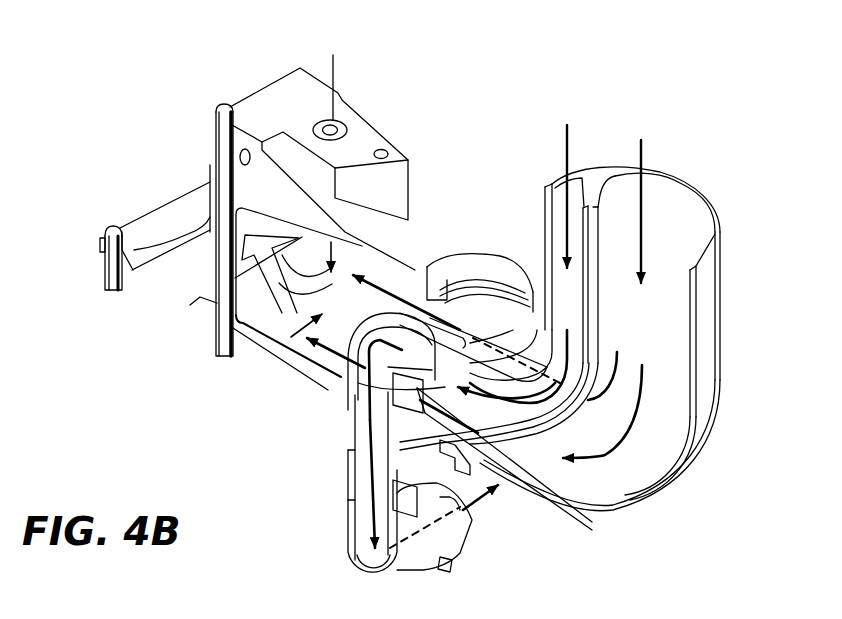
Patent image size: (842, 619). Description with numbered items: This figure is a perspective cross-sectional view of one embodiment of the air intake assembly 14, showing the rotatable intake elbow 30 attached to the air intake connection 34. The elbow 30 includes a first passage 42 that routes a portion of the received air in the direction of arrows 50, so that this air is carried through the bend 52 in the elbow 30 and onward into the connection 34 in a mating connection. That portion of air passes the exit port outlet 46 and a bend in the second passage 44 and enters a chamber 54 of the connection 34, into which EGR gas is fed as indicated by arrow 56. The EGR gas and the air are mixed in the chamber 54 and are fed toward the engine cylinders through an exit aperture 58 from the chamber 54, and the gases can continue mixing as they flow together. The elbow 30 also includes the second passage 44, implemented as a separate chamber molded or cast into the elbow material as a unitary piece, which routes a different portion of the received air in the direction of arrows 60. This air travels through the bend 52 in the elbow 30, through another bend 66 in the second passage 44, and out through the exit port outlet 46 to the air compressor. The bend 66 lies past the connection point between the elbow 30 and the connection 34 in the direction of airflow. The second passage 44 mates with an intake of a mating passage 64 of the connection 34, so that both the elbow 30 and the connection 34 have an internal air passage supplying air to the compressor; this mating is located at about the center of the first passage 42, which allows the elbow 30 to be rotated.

The air intake assembly 14 is at (138, 130).
The elbow 30 is at (728, 357).
The air intake connection 34 is at (426, 237).
The first passage 42 is at (676, 362).
The second passage 44 is at (558, 198).
The exit port outlet 46 is at (352, 553).
The arrows 50 is at (647, 237).
The bend 52 is at (675, 502).
The chamber 54 is at (325, 314).
The arrow 56 is at (333, 55).
The exit aperture 58 is at (183, 270).
The arrows 60 is at (580, 153).
The mating passage 64 is at (348, 350).
The bend 66 is at (408, 237).